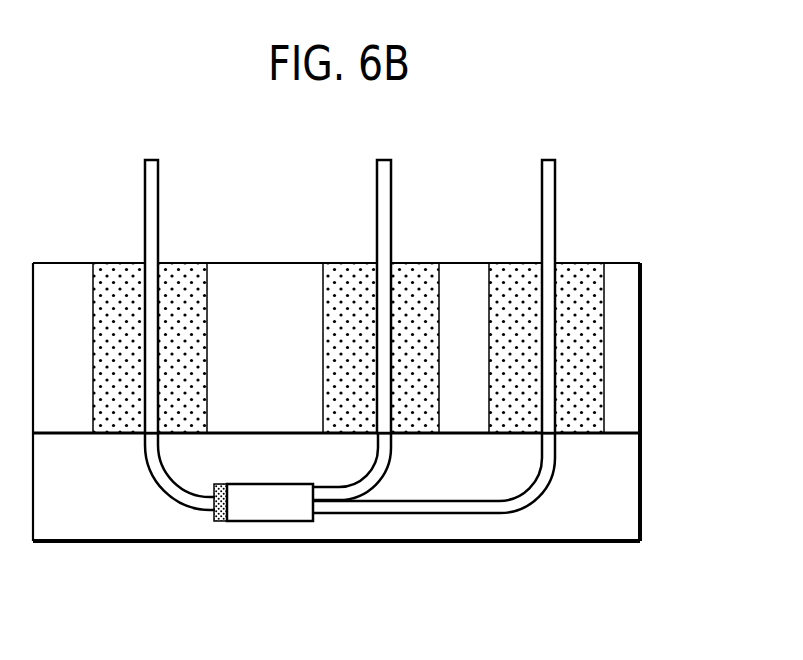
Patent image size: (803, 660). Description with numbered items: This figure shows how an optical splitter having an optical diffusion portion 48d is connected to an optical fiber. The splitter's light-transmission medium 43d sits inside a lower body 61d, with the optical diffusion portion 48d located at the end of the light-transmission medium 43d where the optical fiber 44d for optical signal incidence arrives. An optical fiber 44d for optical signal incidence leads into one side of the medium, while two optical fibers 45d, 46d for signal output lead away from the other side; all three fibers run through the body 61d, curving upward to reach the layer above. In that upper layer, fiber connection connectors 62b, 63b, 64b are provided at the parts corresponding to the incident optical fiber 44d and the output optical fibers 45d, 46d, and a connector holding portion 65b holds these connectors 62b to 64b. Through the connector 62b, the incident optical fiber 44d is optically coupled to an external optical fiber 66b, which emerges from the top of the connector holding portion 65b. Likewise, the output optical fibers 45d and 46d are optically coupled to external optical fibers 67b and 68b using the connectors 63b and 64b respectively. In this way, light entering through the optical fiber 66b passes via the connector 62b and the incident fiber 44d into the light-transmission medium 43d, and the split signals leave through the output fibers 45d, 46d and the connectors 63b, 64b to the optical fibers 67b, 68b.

The base body 61d is at (585, 542).
The fiber connection connector 62b is at (105, 262).
The fiber connection connector 63b is at (338, 262).
The fiber connection connector 64b is at (503, 262).
The connector holding portion 65b is at (265, 262).
The optical fiber 66b is at (158, 172).
The optical fiber 67b is at (391, 172).
The optical fiber 68b is at (555, 172).
The light-transmission medium 43d is at (293, 522).
The optical fiber for optical signal incidence 44d is at (160, 490).
The optical fiber for signal output 45d is at (365, 490).
The optical fiber for signal output 46d is at (490, 515).
The optical diffusion portion 48d is at (222, 521).